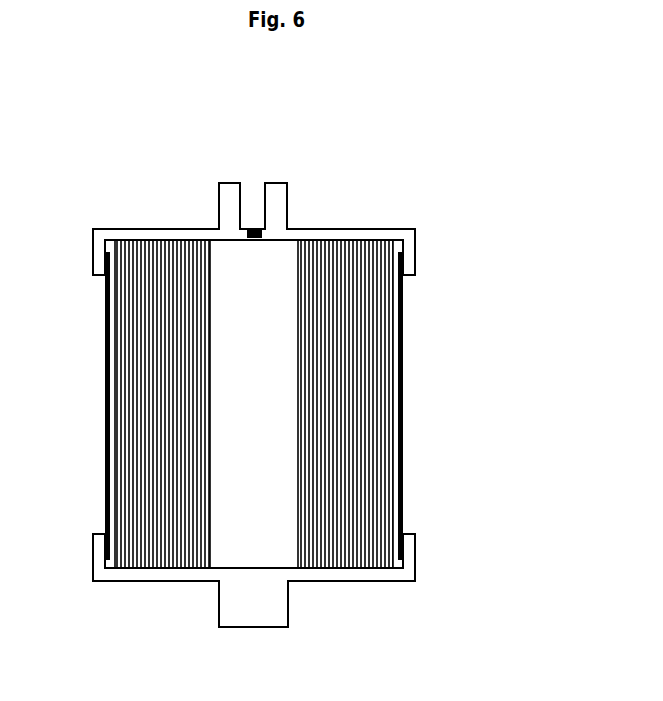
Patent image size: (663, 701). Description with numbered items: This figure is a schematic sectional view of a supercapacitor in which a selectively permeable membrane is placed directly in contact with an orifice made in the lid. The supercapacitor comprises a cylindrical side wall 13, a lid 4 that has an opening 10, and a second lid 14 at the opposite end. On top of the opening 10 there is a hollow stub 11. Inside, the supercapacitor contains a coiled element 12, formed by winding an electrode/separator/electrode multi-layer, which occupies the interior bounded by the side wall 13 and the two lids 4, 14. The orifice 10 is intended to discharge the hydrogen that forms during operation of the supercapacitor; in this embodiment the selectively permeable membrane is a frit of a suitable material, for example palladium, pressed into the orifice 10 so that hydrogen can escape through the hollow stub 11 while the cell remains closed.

The lid 4 is at (152, 228).
The opening 10 is at (257, 236).
The hollow stub 11 is at (216, 182).
The coiled element 12 is at (160, 444).
The cylindrical side wall 13 is at (406, 416).
The lid 14 is at (278, 598).